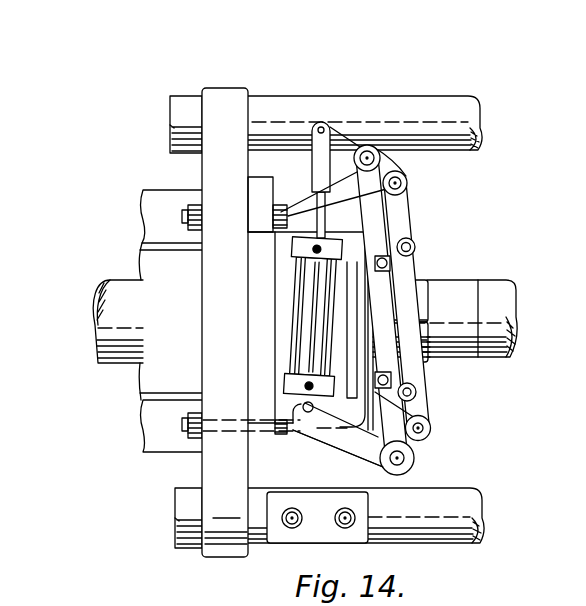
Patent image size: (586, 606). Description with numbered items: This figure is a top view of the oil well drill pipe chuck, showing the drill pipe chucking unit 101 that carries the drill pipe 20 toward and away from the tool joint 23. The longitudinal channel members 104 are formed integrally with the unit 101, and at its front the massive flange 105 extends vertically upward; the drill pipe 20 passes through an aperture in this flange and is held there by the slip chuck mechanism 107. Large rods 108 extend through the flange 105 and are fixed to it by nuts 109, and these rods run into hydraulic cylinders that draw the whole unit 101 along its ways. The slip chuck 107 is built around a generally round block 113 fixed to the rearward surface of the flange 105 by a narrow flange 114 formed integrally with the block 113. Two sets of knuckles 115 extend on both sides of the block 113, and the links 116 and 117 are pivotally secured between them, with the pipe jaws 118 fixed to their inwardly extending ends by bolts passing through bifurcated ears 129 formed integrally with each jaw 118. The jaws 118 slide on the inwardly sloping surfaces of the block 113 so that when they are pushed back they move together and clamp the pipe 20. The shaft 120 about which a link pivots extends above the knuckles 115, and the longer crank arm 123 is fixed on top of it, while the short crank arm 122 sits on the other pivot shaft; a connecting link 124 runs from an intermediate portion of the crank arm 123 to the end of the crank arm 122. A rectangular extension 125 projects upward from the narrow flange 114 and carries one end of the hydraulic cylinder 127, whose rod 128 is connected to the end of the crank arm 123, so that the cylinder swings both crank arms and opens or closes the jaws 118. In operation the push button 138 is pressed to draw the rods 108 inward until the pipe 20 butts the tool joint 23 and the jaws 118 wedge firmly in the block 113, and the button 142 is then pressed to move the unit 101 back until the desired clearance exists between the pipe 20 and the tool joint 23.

The drill pipe 20 is at (470, 294).
The tool joint 23 is at (500, 312).
The drill pipe chucking unit 101 is at (157, 381).
The longitudinal channel members 104 is at (133, 234).
The flange 105 is at (215, 275).
The slip chuck mechanism 107 is at (450, 267).
The large rods 108 is at (484, 140).
The nuts 109 is at (183, 101).
The block 113 is at (332, 443).
The narrow flange 114 is at (262, 187).
The knuckles 115 is at (416, 160).
The link 116 is at (410, 222).
The link 117 is at (431, 420).
The pipe jaws 118 is at (420, 290).
The shaft 120 is at (420, 185).
The short crank arm 122 is at (430, 450).
The longer crank arm 123 is at (351, 138).
The connecting link 124 is at (421, 307).
The rectangular extension 125 is at (258, 299).
The hydraulic cylinder 127 is at (305, 322).
The rod 128 is at (312, 198).
The bifurcated ears 129 is at (420, 253).
The push button 138 is at (293, 523).
The button 142 is at (345, 524).